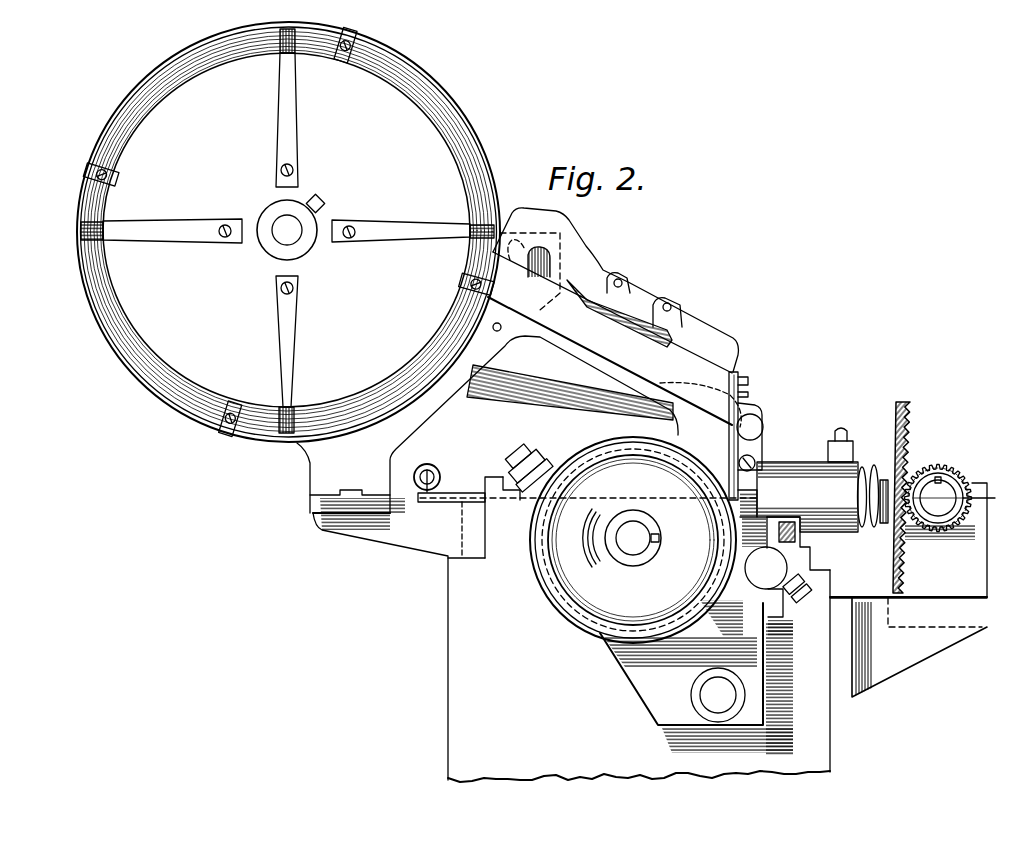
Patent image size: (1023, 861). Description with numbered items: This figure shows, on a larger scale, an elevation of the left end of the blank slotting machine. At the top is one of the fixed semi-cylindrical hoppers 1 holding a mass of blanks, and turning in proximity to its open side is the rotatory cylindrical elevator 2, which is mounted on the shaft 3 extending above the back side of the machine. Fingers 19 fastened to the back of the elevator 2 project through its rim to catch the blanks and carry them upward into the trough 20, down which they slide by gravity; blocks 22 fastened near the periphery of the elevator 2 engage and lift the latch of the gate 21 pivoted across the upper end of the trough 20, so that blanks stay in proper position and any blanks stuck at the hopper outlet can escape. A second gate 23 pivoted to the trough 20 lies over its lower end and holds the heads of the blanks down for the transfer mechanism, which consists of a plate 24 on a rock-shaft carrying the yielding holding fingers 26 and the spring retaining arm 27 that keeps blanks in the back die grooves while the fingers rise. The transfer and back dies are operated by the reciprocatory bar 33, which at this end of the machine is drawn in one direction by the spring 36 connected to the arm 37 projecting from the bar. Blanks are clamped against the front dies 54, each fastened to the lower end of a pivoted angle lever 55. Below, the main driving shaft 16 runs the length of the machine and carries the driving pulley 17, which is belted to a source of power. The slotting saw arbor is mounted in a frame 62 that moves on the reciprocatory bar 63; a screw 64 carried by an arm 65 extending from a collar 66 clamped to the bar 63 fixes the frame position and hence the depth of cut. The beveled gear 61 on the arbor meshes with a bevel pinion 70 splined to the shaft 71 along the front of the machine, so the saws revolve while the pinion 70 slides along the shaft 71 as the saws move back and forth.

The hopper 1 is at (108, 374).
The elevator 2 is at (286, 230).
The shaft 3 is at (268, 238).
The fingers 19 is at (288, 106).
The blocks 22 is at (352, 44).
The gate 21 is at (578, 240).
The trough 20 is at (600, 279).
The gate 23 is at (722, 343).
The plate 24 is at (740, 372).
The holding fingers 26 is at (742, 375).
The retaining arm 27 is at (745, 400).
The frame 62 is at (816, 462).
The beveled gear 61 is at (913, 421).
The bevel pinion 70 is at (955, 474).
The shaft 71 is at (990, 501).
The front dies 54 is at (762, 470).
The angle lever 55 is at (570, 392).
The reciprocatory bar 33 is at (548, 460).
The spring 36 is at (436, 470).
The arm 37 is at (470, 490).
The driving shaft 16 is at (622, 538).
The driving pulley 17 is at (537, 591).
The arm 65 is at (808, 530).
The screw 64 is at (820, 540).
The collar 66 is at (822, 563).
The reciprocatory bar 63 is at (793, 620).